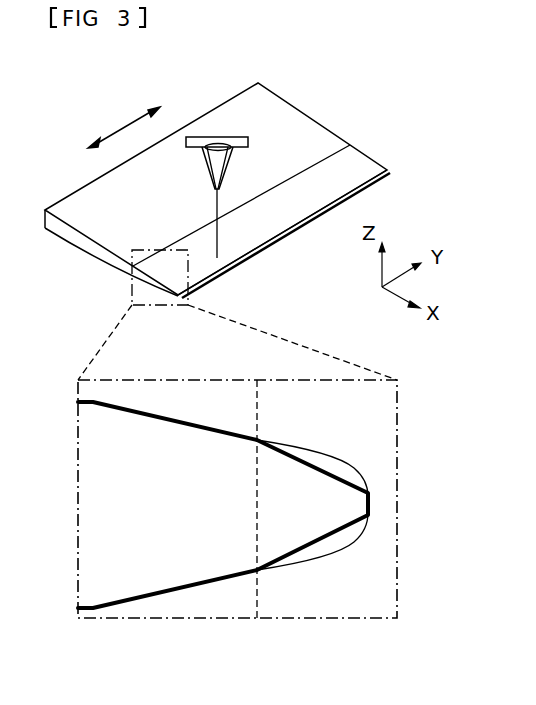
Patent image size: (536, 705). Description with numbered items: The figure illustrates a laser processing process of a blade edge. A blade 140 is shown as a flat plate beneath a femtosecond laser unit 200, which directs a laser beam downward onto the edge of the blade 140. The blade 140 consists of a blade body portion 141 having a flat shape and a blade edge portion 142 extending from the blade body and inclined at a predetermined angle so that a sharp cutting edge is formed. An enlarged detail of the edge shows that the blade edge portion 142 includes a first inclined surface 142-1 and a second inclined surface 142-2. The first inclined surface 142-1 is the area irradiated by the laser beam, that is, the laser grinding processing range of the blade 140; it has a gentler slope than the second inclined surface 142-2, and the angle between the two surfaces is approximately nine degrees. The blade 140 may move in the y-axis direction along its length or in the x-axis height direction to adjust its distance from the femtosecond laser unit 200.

The blade 140 is at (240, 173).
The blade body portion 141 is at (245, 168).
The blade edge portion 142 is at (296, 209).
The first inclined surface 142-1 is at (310, 545).
The second inclined surface 142-2 is at (255, 634).
The femtosecond laser unit 200 is at (200, 140).